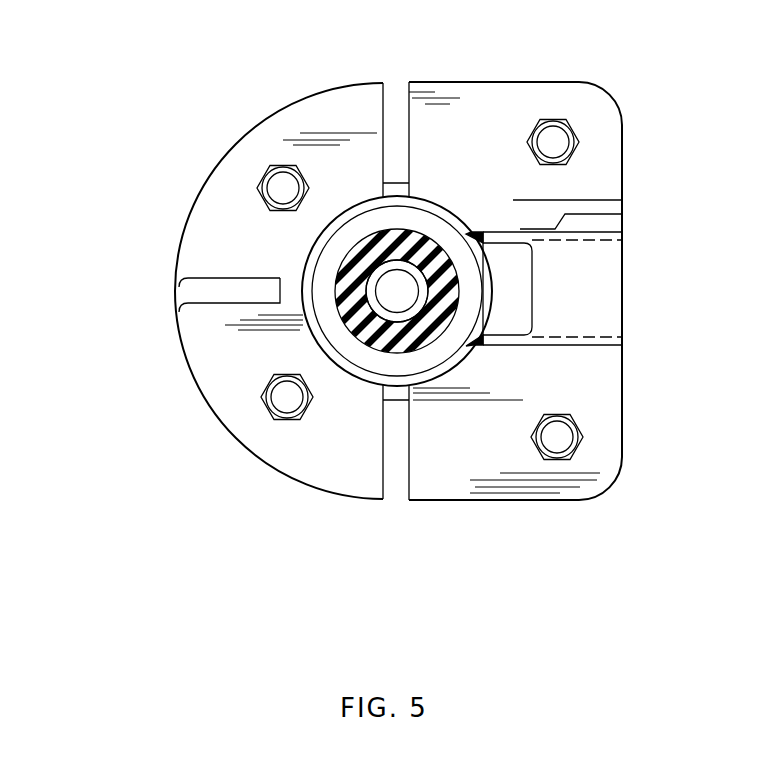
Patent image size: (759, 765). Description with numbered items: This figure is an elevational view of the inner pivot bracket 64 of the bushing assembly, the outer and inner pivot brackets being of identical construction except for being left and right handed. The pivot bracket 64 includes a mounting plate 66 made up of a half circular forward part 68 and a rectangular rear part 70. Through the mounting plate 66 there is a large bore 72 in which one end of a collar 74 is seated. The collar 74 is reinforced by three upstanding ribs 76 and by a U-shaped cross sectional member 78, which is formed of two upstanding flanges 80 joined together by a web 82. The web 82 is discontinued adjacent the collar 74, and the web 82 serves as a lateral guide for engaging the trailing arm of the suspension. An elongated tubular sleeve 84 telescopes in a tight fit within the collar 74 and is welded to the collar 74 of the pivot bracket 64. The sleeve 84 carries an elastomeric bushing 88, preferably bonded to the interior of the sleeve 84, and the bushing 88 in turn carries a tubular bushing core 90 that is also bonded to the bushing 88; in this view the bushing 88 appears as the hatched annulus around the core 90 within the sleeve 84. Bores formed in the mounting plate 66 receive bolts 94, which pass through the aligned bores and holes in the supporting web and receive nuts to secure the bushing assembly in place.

The inner pivot bracket 64 is at (232, 150).
The mounting plate 66 is at (313, 113).
The half circular forward part 68 is at (205, 350).
The rectangular rear part 70 is at (600, 170).
The large bore 72 is at (453, 210).
The collar 74 is at (455, 360).
The upstanding ribs 76 is at (407, 133).
The U-shaped cross sectional member 78 is at (565, 214).
The upstanding flanges 80 is at (493, 235).
The web 82 is at (590, 262).
The elongated tubular sleeve 84 is at (322, 278).
The elastomeric bushing 88 is at (353, 275).
The bushing core 90 is at (383, 270).
The bolts 94 is at (578, 428).